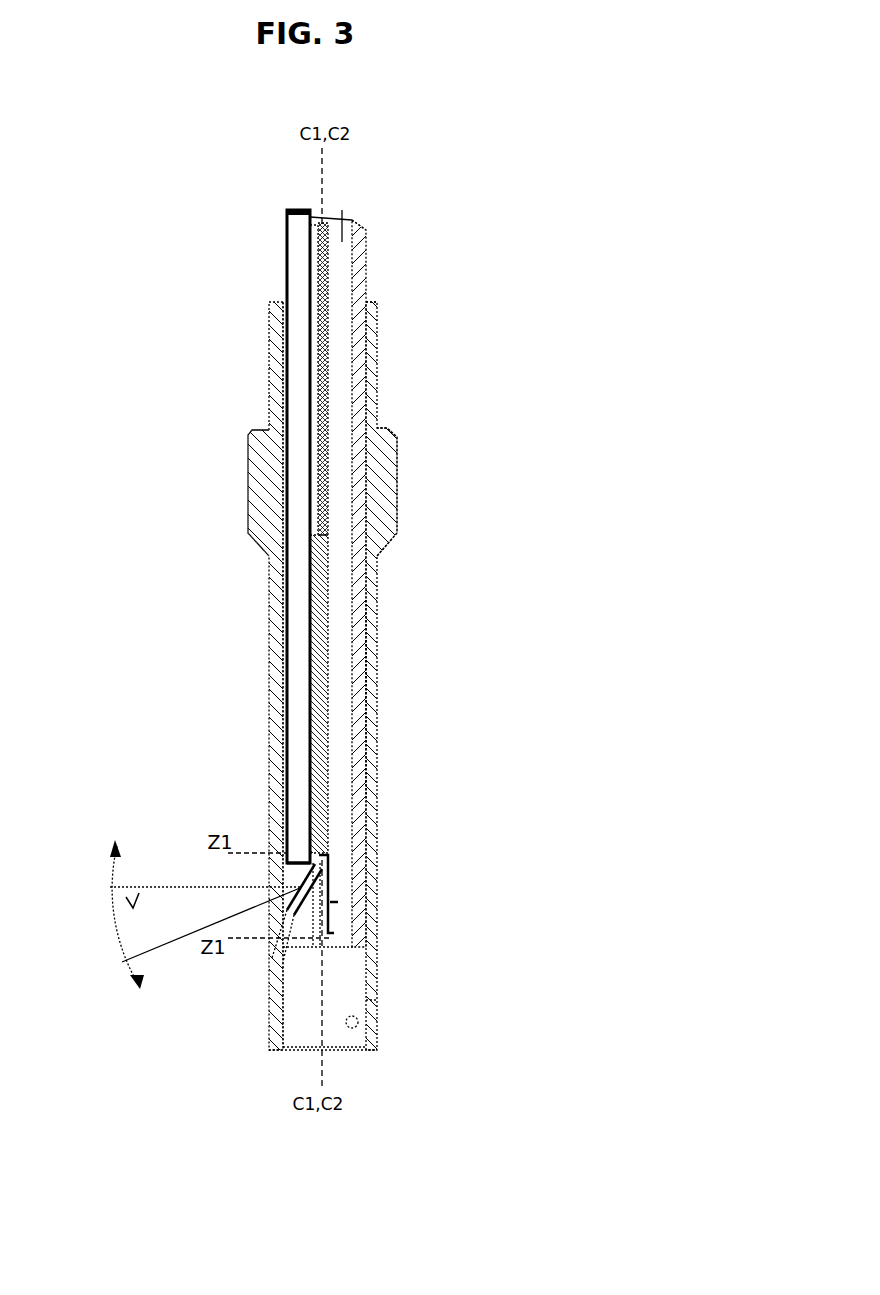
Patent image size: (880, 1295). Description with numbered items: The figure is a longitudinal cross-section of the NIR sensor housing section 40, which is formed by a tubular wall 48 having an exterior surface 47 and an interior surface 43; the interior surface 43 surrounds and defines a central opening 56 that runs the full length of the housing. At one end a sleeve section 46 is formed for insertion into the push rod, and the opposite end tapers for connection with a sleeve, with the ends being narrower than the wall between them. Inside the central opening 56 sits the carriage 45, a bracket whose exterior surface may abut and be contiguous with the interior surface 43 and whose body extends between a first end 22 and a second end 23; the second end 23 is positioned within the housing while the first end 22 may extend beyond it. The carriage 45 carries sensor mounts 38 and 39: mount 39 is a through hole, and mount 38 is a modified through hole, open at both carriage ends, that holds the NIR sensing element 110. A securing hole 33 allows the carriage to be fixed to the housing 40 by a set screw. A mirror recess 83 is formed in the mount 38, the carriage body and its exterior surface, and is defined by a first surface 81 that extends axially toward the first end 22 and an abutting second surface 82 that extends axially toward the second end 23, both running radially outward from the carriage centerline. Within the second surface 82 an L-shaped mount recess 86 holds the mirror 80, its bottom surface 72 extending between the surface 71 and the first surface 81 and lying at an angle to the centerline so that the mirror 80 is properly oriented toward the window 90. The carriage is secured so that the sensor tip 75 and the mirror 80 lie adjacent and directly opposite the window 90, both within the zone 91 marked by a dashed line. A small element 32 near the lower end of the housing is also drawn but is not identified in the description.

The first end 22 is at (358, 220).
The second end 23 is at (373, 1050).
The opening 32 is at (358, 1025).
The securing hole 33 is at (376, 313).
The sensor mount 38 is at (287, 250).
The sensor mount 39 is at (343, 215).
The sensor housing section 40 is at (397, 437).
The interior surface 43 is at (373, 672).
The carriage 45 is at (363, 228).
The sleeve section 46 is at (269, 370).
The exterior surface 47 is at (378, 723).
The tubular wall 48 is at (311, 217).
The central opening 56 is at (268, 289).
The surface 71 is at (303, 905).
The bottom surface 72 is at (297, 905).
The sensor tip 75 is at (288, 862).
The mirror 80 is at (296, 884).
The first surface 81 is at (300, 892).
The second surface 82 is at (317, 866).
The mirror recess 83 is at (278, 880).
The mount recess 86 is at (312, 902).
The window 90 is at (308, 882).
The zone 91 is at (342, 915).
The NIR sensing element 110 is at (300, 652).